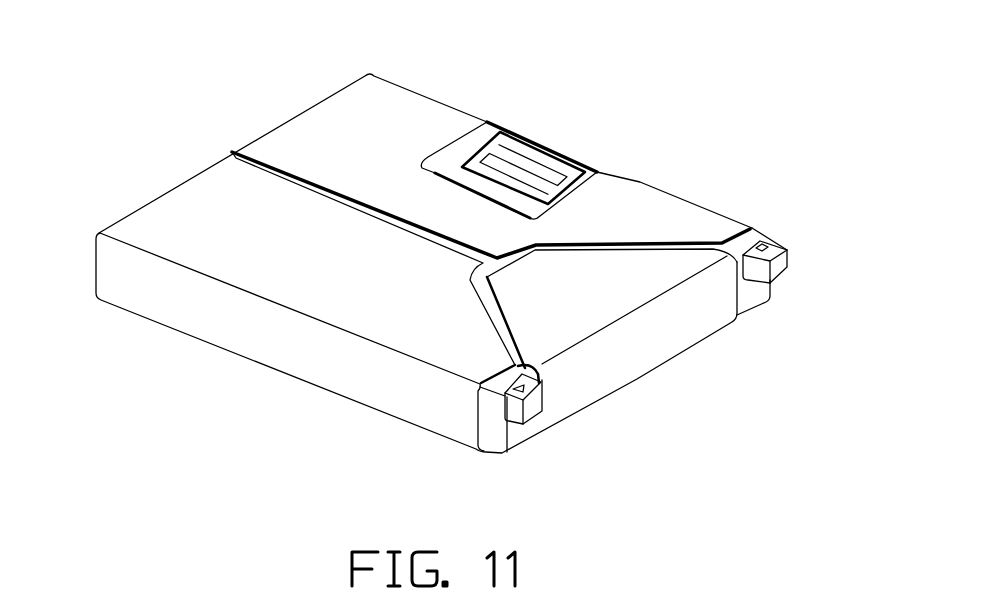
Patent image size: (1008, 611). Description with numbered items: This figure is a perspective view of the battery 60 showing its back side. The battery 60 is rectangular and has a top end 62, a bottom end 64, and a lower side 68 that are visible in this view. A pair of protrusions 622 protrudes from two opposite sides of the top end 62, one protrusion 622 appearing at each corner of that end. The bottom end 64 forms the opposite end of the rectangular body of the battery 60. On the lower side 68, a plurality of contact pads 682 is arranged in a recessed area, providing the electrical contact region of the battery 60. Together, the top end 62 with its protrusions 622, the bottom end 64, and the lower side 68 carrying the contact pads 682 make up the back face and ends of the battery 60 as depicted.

The battery 60 is at (273, 103).
The top end 62 is at (610, 372).
The protrusions 622 is at (783, 267).
The bottom end 64 is at (180, 182).
The lower side 68 is at (398, 120).
The contact pads 682 is at (520, 168).